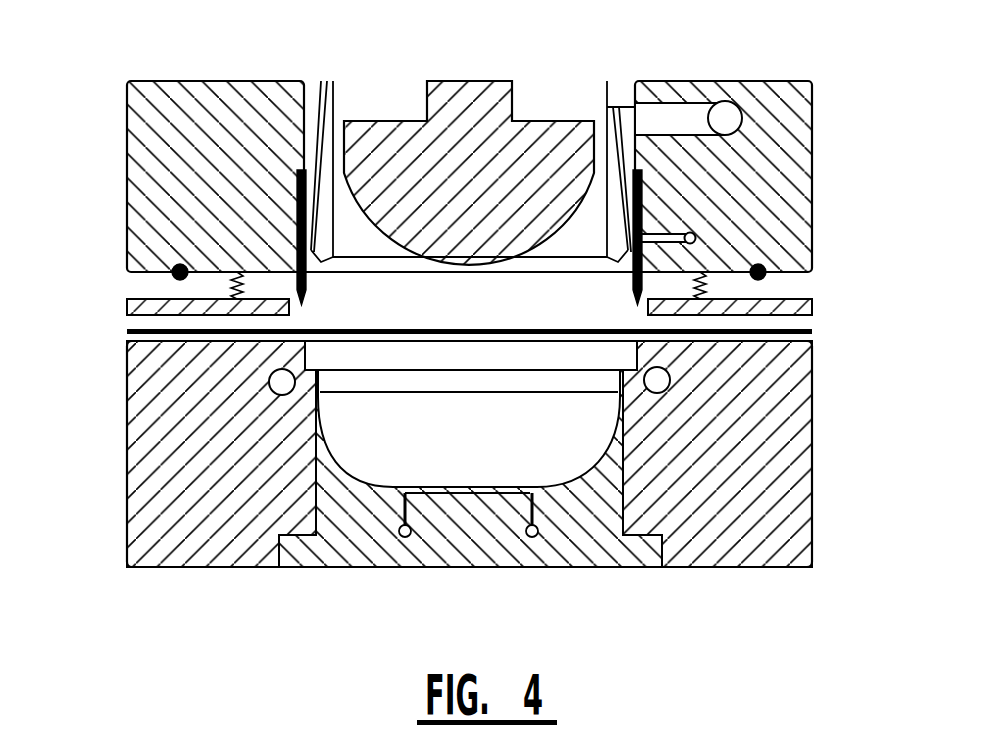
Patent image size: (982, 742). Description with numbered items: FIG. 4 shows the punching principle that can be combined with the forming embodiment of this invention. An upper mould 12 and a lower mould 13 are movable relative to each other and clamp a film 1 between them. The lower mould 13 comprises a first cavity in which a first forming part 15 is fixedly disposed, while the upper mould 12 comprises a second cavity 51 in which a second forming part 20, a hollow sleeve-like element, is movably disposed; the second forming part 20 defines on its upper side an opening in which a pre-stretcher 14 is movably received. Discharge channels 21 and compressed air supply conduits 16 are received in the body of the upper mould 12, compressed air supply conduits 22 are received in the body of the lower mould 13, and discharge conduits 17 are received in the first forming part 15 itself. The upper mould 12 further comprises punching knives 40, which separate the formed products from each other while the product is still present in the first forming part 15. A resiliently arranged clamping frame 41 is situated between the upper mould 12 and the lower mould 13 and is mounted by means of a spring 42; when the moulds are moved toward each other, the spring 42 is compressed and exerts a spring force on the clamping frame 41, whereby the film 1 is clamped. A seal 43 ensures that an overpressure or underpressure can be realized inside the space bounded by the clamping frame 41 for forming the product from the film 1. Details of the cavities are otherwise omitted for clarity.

The film 1 is at (767, 322).
The upper mould 12 is at (777, 177).
The lower mould 13 is at (765, 472).
The pre-stretcher 14 is at (377, 210).
The first forming part 15 is at (343, 538).
The compressed air supply conduits 16 is at (725, 115).
The discharge conduits 17 is at (540, 528).
The second forming part 20 is at (320, 128).
The discharge channels 21 is at (690, 235).
The compressed air supply conduits 22 is at (660, 378).
The punching knives 40 is at (300, 270).
The clamping frame 41 is at (190, 315).
The spring 42 is at (245, 295).
The seal 43 is at (760, 272).
The second cavity 51 is at (383, 92).